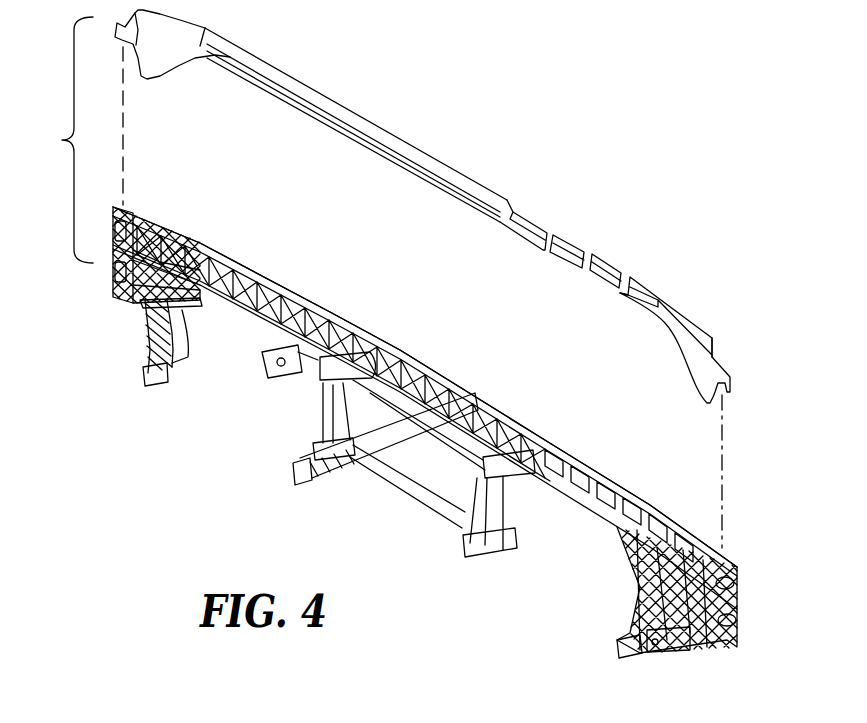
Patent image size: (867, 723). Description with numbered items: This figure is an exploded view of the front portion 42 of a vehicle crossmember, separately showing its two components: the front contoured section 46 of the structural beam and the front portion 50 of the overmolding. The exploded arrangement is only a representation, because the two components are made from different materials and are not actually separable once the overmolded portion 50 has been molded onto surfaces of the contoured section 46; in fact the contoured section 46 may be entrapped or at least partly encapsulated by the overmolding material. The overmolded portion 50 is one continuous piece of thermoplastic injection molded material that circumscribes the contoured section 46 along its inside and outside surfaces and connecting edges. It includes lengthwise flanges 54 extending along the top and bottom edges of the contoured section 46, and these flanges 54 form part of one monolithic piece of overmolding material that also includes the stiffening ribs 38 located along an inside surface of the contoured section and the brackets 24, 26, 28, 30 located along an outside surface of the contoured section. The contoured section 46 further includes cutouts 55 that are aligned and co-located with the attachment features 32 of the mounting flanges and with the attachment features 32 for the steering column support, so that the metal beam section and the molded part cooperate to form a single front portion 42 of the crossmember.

The front portion 42 is at (374, 282).
The front contoured section 46 is at (243, 72).
The cutouts 55 is at (617, 286).
The lengthwise flanges 54 is at (299, 295).
The stiffening ribs 38 is at (345, 316).
The front portion of the overmolding 50 is at (452, 388).
The bracket 26 is at (267, 360).
The bracket 30 is at (170, 373).
The bracket 28 is at (323, 430).
The bracket 24 is at (337, 472).
The attachment features 32 is at (625, 492).